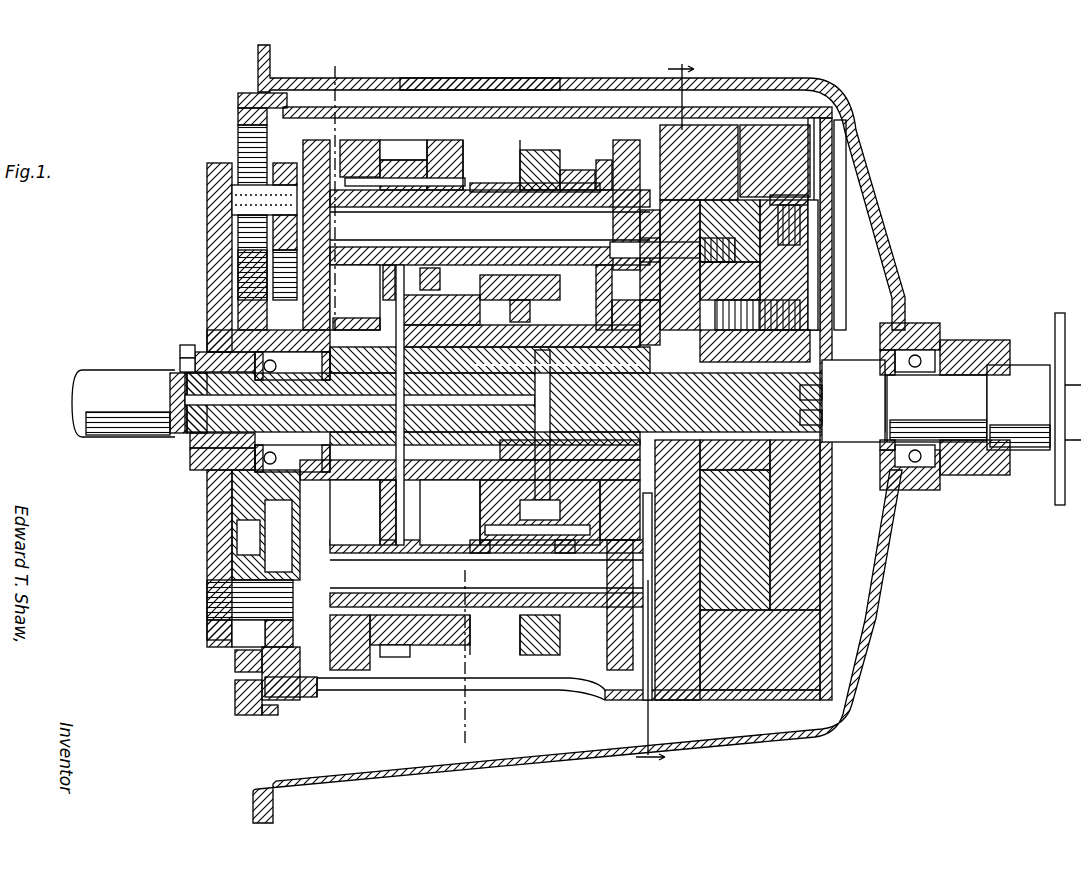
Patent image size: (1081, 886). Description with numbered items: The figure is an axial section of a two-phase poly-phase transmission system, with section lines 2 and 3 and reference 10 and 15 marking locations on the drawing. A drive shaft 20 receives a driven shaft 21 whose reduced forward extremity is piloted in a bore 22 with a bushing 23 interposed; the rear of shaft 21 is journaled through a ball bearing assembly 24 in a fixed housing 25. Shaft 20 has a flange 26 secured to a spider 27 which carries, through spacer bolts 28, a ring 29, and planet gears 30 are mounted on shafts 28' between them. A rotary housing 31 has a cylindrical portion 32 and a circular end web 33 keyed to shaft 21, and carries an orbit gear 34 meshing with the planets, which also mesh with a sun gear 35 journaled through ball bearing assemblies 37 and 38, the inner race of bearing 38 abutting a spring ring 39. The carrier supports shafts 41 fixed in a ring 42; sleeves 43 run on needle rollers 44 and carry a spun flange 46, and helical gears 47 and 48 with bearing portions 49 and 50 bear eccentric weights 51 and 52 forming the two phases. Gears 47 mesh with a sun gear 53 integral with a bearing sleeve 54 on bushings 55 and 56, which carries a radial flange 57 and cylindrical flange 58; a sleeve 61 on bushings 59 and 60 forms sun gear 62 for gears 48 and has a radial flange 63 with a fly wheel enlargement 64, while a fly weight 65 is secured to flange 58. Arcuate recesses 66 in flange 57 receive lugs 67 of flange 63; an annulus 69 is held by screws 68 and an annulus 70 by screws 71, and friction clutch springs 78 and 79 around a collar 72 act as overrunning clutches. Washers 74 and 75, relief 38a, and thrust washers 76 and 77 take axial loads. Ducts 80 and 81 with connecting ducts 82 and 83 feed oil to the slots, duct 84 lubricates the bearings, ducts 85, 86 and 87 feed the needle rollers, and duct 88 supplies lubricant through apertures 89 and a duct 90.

The section line 2- 2 is at (398, 399).
The section line 3- 3 is at (665, 411).
The supporting bracket 10 is at (310, 140).
The clutch member 15 is at (356, 315).
The drive shaft 20 is at (118, 425).
The driven shaft 21 is at (965, 378).
The bore 22 is at (195, 433).
The bushing 23 is at (200, 448).
The ball bearing assembly 24 is at (935, 340).
The fixed housing 25 is at (912, 300).
The flange 26 is at (207, 500).
The spider 27 is at (207, 242).
The spacer bolts 28 is at (227, 212).
The shafts 28' is at (224, 613).
The ring 29 is at (289, 673).
The planet gears 30 is at (235, 664).
The rotary housing 31 is at (592, 107).
The cylindrical portion 32 is at (476, 78).
The circular end web 33 is at (832, 128).
The orbit gear 34 is at (238, 100).
The sun gear 35 is at (238, 290).
The ball bearing assembly 37 is at (180, 350).
The ball bearing assembly 38 is at (232, 336).
The relieved portion 38a is at (215, 355).
The spring ring 39 is at (330, 462).
The shafts 41 is at (490, 398).
The ring 42 is at (628, 140).
The sleeves 43 is at (490, 160).
The needle rollers 44 is at (577, 172).
The flange 46 is at (613, 160).
The gears 47 is at (405, 160).
The gears 48 is at (540, 152).
The bearing portion 49 is at (360, 150).
The bearing portion 50 is at (522, 190).
The eccentric weights 51 is at (350, 140).
The eccentric weights 52 is at (482, 553).
The sun gear 53 is at (355, 297).
The bearing sleeve 54 is at (480, 290).
The bushing 55 is at (432, 320).
The bushing 56 is at (625, 312).
The radial flange 57 is at (818, 276).
The cylindrical flange 58 is at (815, 156).
The bushing 59 is at (470, 328).
The bushing 60 is at (614, 297).
The sleeve 61 is at (480, 490).
The sun gear 62 is at (485, 530).
The radial flange 63 is at (648, 215).
The fly wheel enlargement 64 is at (700, 125).
The fly weight 65 is at (775, 125).
The arcuate recesses 66 is at (668, 245).
The lugs 67 is at (810, 262).
The screws 68 is at (640, 245).
The annulus 69 is at (760, 240).
The annulus 70 is at (848, 240).
The screws 71 is at (800, 203).
The collar 72 is at (853, 401).
The washer 74 is at (810, 342).
The washer 75 is at (355, 512).
The forward thrust washer 76 is at (450, 512).
The rear thrust washer 77 is at (648, 301).
The friction clutch spring 78 is at (810, 298).
The friction clutch spring 79 is at (800, 318).
The duct 80 is at (178, 433).
The duct 81 is at (205, 470).
The connecting duct 82 is at (822, 398).
The connecting duct 83 is at (822, 418).
The duct 84 is at (290, 448).
The duct 85 is at (396, 508).
The duct 86 is at (432, 268).
The ducts 87 is at (388, 265).
The duct 88 is at (550, 413).
The apertures 89 is at (560, 458).
The duct 90 is at (643, 515).